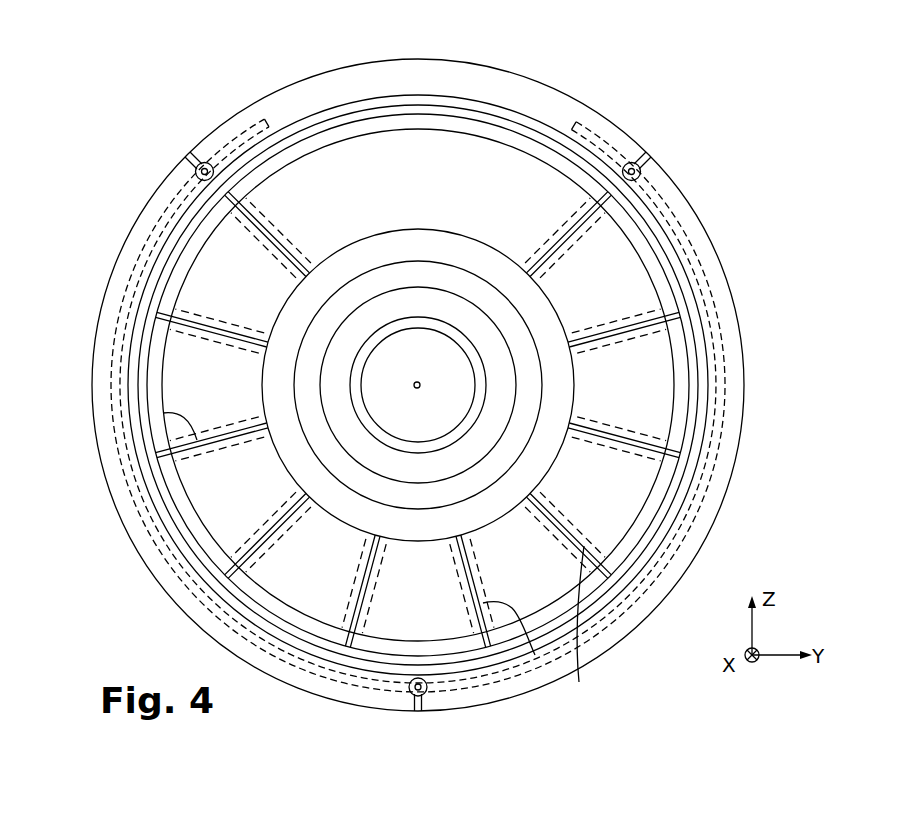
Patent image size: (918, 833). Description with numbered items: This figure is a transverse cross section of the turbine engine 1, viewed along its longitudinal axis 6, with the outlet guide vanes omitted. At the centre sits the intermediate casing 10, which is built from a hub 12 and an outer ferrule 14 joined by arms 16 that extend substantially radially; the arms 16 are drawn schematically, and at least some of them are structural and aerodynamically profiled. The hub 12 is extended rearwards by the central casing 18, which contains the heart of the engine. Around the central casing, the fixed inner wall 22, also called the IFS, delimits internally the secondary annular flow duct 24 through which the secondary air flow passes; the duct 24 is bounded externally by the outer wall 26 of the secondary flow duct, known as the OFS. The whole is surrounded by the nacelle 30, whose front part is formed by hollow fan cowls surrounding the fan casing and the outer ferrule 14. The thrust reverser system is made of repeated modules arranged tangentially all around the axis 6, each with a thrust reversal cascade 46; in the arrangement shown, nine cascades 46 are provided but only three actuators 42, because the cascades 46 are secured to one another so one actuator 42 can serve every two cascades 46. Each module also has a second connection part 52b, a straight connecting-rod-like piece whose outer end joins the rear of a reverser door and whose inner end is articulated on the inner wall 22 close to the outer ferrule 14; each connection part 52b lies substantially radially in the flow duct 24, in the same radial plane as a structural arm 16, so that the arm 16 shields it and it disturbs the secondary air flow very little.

The turbine engine 1 is at (108, 109).
The longitudinal axis 6 is at (380, 233).
The intermediate casing 10 is at (408, 562).
The hub 12 is at (343, 503).
The outer ferrule 14 is at (292, 130).
The arms 16 is at (272, 257).
The central casing 18 is at (323, 442).
The inner wall 22 is at (417, 383).
The secondary annular flow duct 24 is at (428, 188).
The rim inner ring 26 is at (487, 152).
The nacelle 30 is at (606, 101).
The actuator 42 is at (200, 163).
The thrust reversal cascade 46 is at (172, 193).
The second connection part 52b is at (163, 413).